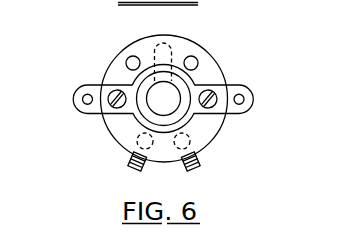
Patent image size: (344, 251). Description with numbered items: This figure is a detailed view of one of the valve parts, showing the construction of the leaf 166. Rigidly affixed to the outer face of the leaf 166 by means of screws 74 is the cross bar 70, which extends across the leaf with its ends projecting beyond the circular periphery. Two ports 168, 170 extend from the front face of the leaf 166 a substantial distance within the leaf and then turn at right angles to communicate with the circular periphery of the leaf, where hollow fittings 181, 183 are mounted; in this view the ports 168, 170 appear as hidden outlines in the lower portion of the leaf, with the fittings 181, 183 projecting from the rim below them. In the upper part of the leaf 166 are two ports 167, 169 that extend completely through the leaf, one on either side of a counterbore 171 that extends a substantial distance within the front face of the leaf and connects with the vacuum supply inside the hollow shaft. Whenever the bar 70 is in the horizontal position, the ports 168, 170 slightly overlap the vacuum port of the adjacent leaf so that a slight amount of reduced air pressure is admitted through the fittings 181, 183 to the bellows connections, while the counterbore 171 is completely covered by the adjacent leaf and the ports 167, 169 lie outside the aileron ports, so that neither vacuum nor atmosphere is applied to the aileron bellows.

The leaf 166 is at (183, 45).
The cross bar 70 is at (233, 90).
The screws 74 is at (111, 93).
The port 167 is at (130, 62).
The port 169 is at (199, 62).
The counterbore 171 is at (148, 39).
The port 168 is at (140, 136).
The port 170 is at (190, 137).
The hollow fitting 181 is at (130, 167).
The hollow fitting 183 is at (198, 167).